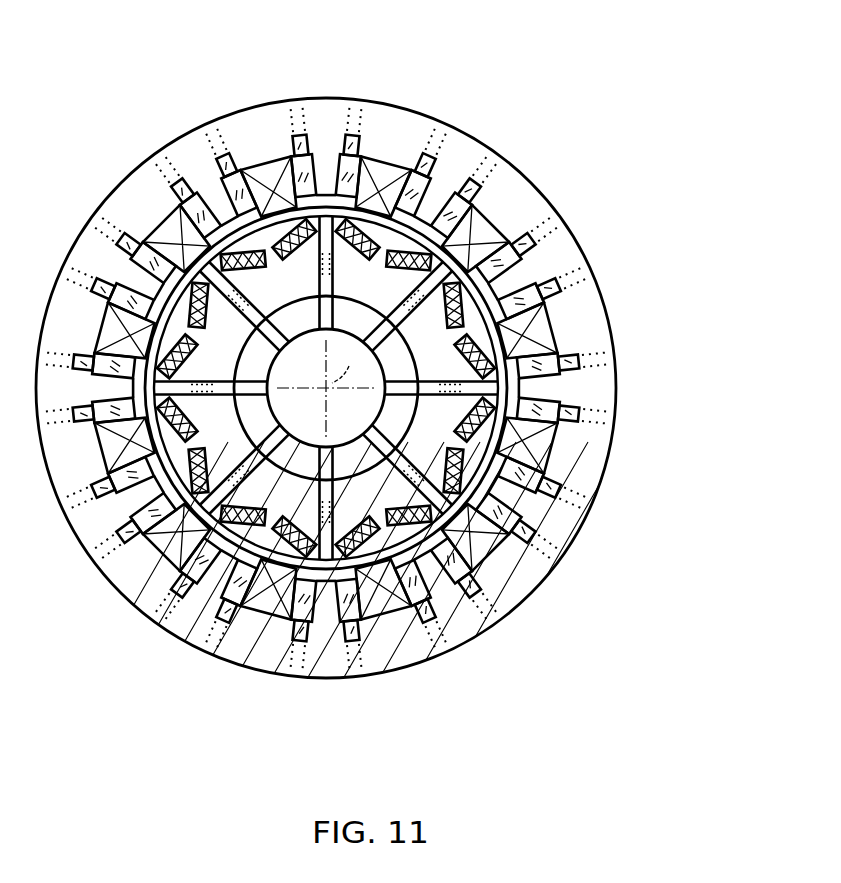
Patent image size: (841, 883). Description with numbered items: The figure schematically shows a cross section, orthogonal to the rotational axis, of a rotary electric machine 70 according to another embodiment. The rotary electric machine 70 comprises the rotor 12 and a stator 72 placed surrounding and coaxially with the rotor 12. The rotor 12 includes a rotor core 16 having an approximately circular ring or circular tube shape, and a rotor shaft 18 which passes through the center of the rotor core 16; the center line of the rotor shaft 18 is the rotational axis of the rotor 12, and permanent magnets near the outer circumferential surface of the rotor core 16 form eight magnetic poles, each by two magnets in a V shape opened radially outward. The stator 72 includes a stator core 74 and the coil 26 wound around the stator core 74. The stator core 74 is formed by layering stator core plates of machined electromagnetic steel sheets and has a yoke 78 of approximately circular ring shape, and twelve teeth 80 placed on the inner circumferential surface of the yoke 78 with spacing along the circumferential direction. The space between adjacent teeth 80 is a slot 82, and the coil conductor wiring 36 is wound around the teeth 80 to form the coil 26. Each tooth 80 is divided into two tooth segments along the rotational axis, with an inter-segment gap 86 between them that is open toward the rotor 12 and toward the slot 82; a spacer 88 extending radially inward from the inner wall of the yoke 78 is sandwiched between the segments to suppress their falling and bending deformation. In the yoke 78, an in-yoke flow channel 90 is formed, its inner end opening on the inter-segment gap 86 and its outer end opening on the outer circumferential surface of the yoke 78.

The rotary electric machine 70 is at (556, 102).
The stator 72 is at (503, 215).
The stator core 74 is at (553, 248).
The yoke 78 is at (593, 337).
The rotor 12 is at (428, 197).
The teeth 80 is at (533, 393).
The inter-segment gap 86 is at (308, 597).
The coil 26 is at (542, 307).
The slot 82 is at (560, 433).
The in-yoke flow channel 90 is at (480, 591).
The coil conductor wiring 36 is at (537, 460).
The spacer 88 is at (433, 580).
The rotor shaft 18 is at (351, 318).
The rotor core 16 is at (398, 241).